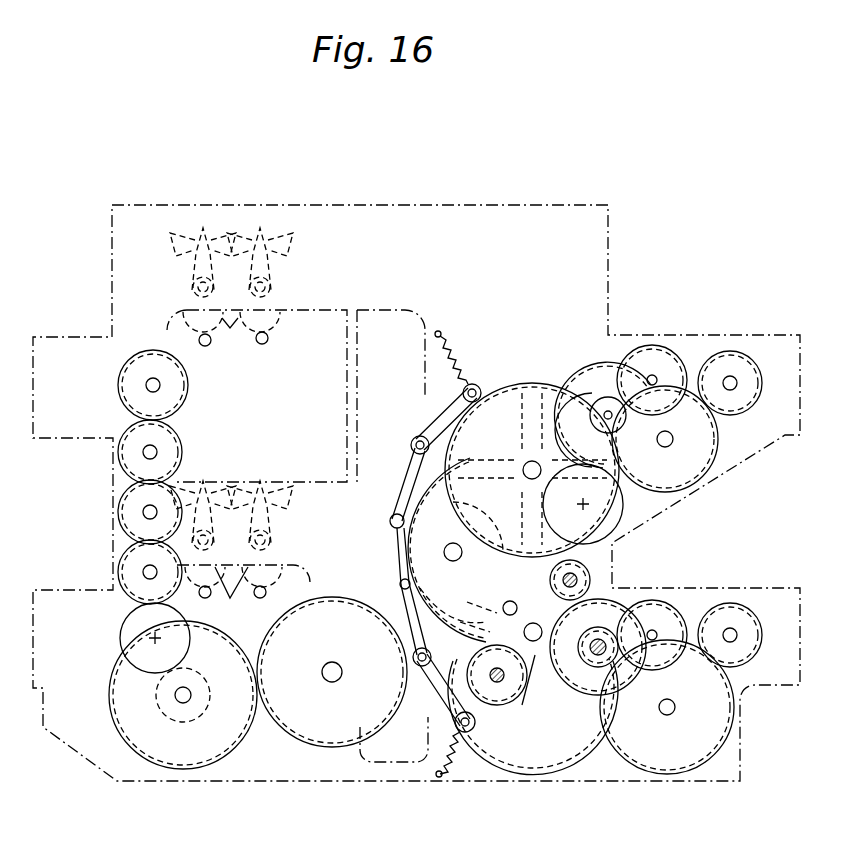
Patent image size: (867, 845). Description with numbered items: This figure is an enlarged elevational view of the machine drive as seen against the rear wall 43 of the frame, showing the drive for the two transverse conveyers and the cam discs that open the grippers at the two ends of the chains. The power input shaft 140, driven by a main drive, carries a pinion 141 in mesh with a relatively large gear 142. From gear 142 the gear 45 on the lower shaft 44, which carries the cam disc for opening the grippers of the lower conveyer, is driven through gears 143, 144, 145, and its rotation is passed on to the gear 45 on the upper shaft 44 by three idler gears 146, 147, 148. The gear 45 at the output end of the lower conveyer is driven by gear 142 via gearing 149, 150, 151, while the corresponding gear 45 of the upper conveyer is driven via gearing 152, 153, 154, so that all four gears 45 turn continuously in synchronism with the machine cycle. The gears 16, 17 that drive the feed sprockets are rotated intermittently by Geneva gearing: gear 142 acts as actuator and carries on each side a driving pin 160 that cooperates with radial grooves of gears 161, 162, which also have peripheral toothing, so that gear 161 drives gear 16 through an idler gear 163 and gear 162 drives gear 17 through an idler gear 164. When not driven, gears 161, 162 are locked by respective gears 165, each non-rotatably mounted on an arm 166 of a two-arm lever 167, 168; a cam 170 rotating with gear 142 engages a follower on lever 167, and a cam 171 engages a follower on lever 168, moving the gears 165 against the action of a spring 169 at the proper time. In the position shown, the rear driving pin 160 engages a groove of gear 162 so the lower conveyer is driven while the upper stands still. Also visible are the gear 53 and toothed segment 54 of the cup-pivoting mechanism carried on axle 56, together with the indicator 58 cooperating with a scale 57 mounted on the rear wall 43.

The gear 16 is at (733, 363).
The gear 17 is at (743, 613).
The rear wall 43 is at (443, 235).
The shaft 44 is at (152, 386).
The gear 45 is at (137, 372).
The gear 53 is at (267, 339).
The toothed segment 54 is at (277, 325).
The axle 56 is at (194, 288).
The scale 57 is at (187, 241).
The indicator 58 is at (191, 259).
The power input shaft 140 is at (499, 682).
The pinion 141 is at (483, 692).
The gear 142 is at (373, 530).
The gear 143 is at (307, 720).
The gear 144 is at (170, 753).
The gear 145 is at (155, 693).
The idler gear 146 is at (141, 563).
The idler gear 147 is at (135, 503).
The idler gear 148 is at (139, 452).
The gearing 149 is at (590, 577).
The gearing 150 is at (573, 670).
The gearing 151 is at (592, 660).
The gearing 152 is at (617, 508).
The gearing 153 is at (608, 377).
The gearing 154 is at (600, 392).
The driving pin 160 is at (458, 590).
The gear 161 is at (500, 400).
The gear 162 is at (542, 705).
The idler gear 163 is at (697, 447).
The idler gear 164 is at (665, 750).
The gear 165 is at (473, 380).
The arm 166 is at (453, 412).
The two-arm lever 167 is at (416, 427).
The two-arm lever 168 is at (418, 683).
The spring 169 is at (450, 350).
The cam 170 is at (395, 553).
The cam 171 is at (407, 467).